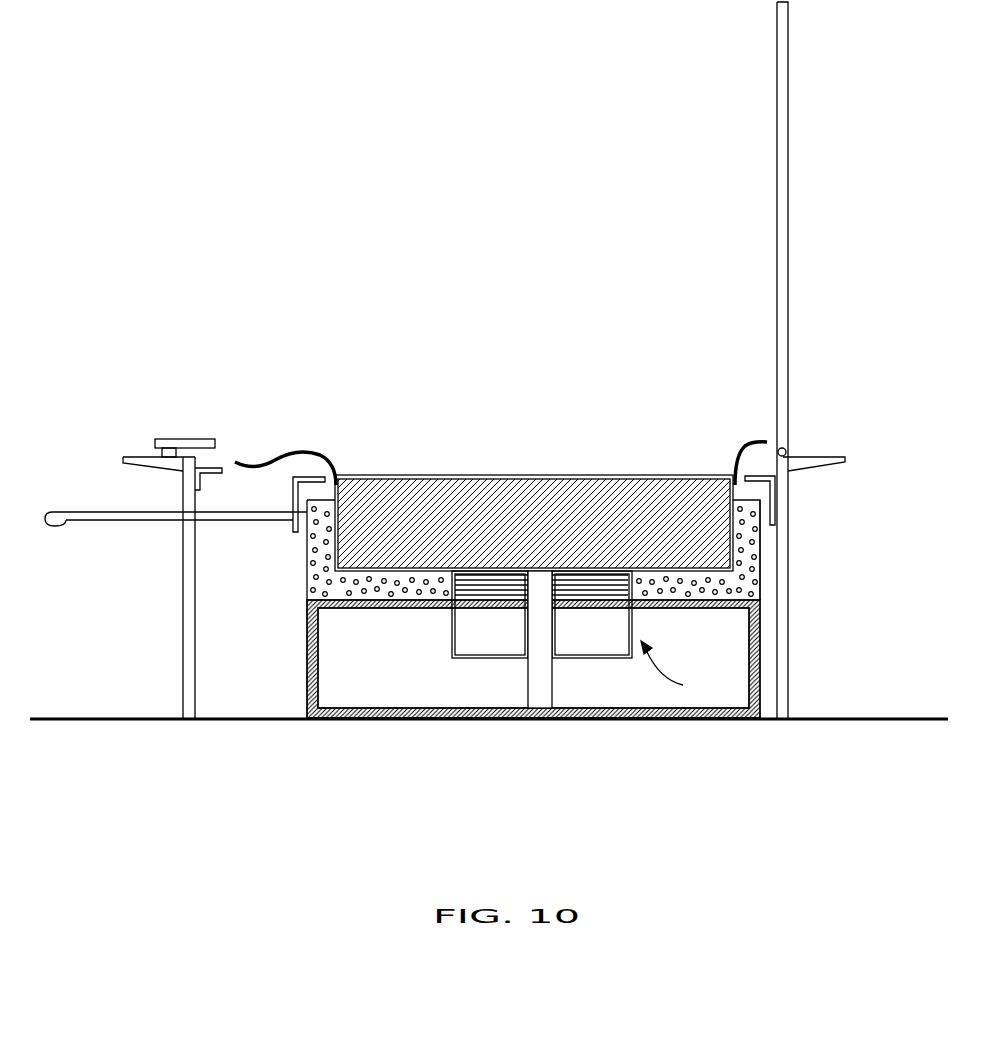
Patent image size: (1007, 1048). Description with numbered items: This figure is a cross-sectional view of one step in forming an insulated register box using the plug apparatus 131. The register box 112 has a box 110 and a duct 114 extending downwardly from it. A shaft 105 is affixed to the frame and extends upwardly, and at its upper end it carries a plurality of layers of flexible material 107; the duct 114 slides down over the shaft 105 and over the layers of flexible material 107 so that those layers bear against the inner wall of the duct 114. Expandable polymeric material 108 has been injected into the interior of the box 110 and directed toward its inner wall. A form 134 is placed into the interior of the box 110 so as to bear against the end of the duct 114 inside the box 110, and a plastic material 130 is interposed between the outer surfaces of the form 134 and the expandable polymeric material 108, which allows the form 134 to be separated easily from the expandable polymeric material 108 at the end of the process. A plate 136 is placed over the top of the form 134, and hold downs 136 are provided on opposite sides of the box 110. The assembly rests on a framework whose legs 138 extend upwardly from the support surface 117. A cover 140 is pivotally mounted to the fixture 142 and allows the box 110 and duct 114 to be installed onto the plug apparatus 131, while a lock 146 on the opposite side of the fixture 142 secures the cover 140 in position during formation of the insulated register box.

The shaft 105 is at (555, 678).
The plurality of layers of flexible material 107 is at (588, 590).
The expandable polymeric material 108 is at (755, 570).
The box 110 is at (305, 592).
The register box 112 is at (770, 548).
The duct 114 is at (450, 632).
The support surface 117 is at (890, 718).
The plastic material 130 is at (325, 458).
The plug apparatus 131 is at (681, 668).
The form 134 is at (500, 500).
The plate 136 is at (428, 477).
The legs 138 is at (183, 578).
The cover 140 is at (789, 248).
The fixture 142 is at (824, 457).
The lock 146 is at (192, 437).